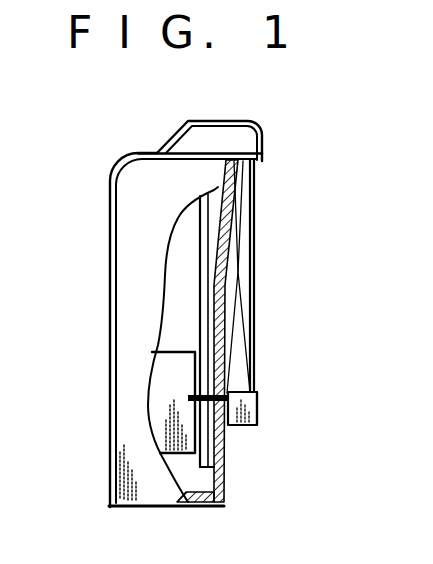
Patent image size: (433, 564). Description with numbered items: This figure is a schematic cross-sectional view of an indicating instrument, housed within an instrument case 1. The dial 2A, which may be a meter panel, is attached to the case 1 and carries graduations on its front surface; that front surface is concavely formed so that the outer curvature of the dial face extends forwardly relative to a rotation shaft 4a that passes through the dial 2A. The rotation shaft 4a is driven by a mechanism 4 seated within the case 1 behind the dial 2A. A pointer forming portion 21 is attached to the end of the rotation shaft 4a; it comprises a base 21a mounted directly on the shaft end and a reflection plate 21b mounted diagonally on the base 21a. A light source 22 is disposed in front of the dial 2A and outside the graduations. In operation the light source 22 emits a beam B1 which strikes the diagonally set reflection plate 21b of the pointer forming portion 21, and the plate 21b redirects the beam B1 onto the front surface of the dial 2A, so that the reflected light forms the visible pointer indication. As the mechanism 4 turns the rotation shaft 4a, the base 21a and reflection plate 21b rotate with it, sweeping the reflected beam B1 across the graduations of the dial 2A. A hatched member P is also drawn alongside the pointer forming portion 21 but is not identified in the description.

The instrument case 1 is at (123, 424).
The light source 22 is at (257, 128).
The beam B1 is at (255, 216).
The pad P is at (228, 277).
The mechanism 4 is at (197, 401).
The rotation shaft 4a is at (192, 398).
The pointer forming portion 21 is at (243, 425).
The base 21a is at (250, 406).
The reflection plate 21b is at (233, 392).
The dial 2A is at (224, 484).